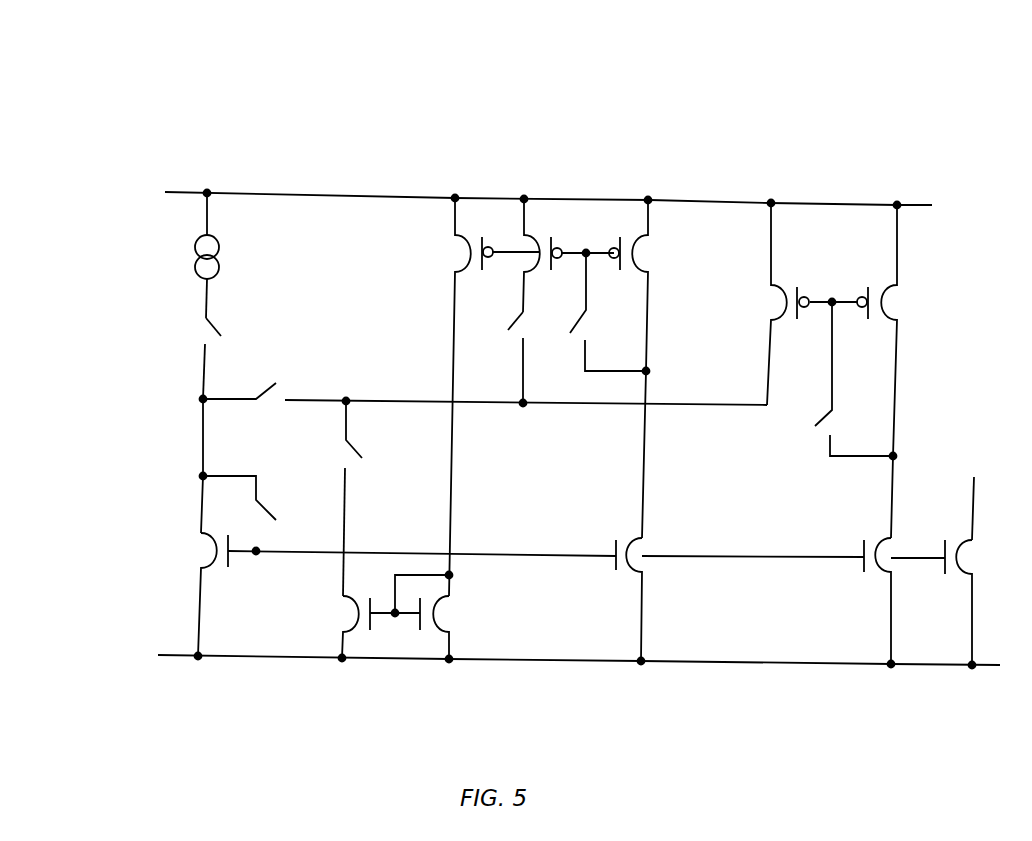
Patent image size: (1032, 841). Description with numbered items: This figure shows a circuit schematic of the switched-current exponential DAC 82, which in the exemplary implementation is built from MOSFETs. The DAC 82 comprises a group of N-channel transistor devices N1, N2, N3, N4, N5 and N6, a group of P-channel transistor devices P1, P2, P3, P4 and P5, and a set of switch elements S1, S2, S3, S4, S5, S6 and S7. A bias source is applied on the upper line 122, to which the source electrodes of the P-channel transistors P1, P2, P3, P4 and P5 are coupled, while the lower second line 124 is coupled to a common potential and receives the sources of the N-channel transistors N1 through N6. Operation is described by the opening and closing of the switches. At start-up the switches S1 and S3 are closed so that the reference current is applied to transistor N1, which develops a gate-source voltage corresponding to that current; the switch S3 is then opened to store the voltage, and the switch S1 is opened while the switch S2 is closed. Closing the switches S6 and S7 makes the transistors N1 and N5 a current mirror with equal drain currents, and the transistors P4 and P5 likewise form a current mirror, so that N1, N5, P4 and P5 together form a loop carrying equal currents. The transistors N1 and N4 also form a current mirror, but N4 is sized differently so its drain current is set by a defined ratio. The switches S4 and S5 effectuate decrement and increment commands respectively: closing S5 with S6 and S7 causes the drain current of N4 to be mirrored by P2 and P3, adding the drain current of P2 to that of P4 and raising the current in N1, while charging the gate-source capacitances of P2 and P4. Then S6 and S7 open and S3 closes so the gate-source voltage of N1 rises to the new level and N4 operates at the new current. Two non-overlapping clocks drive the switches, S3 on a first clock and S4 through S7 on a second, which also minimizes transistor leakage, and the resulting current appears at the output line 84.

The switched-current exponential DAC 82 is at (562, 116).
The output line 84 is at (975, 503).
The line 122 is at (181, 193).
The second line 124 is at (270, 658).
The switch element S1 is at (196, 357).
The switch element S2 is at (485, 379).
The switch element S3 is at (258, 504).
The switch element S4 is at (335, 498).
The switch element S5 is at (496, 357).
The switch element S6 is at (608, 312).
The switch element S7 is at (835, 379).
The N-channel transistor device N1 is at (389, 594).
The N-channel transistor device N2 is at (363, 627).
The N-channel transistor device N3 is at (453, 627).
The N-channel transistor device N4 is at (740, 590).
The N-channel transistor device N5 is at (904, 594).
The N-channel transistor device N6 is at (981, 594).
The P-channel transistor device P1 is at (477, 397).
The P-channel transistor device P2 is at (563, 238).
The P-channel transistor device P3 is at (637, 351).
The P-channel transistor device P4 is at (794, 304).
The P-channel transistor device P5 is at (895, 371).